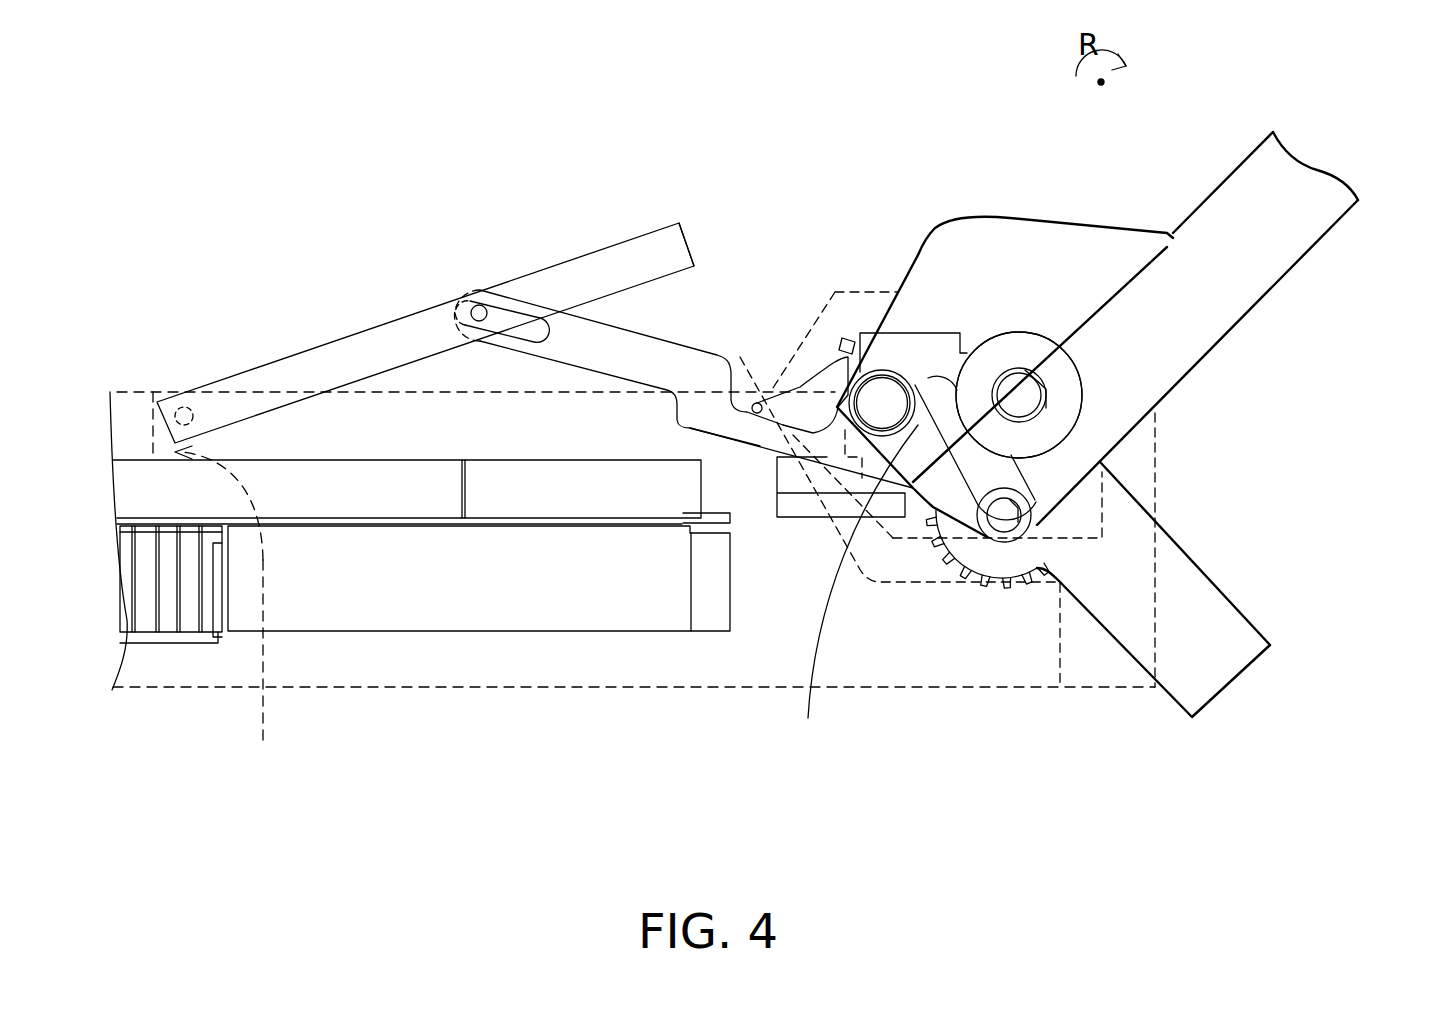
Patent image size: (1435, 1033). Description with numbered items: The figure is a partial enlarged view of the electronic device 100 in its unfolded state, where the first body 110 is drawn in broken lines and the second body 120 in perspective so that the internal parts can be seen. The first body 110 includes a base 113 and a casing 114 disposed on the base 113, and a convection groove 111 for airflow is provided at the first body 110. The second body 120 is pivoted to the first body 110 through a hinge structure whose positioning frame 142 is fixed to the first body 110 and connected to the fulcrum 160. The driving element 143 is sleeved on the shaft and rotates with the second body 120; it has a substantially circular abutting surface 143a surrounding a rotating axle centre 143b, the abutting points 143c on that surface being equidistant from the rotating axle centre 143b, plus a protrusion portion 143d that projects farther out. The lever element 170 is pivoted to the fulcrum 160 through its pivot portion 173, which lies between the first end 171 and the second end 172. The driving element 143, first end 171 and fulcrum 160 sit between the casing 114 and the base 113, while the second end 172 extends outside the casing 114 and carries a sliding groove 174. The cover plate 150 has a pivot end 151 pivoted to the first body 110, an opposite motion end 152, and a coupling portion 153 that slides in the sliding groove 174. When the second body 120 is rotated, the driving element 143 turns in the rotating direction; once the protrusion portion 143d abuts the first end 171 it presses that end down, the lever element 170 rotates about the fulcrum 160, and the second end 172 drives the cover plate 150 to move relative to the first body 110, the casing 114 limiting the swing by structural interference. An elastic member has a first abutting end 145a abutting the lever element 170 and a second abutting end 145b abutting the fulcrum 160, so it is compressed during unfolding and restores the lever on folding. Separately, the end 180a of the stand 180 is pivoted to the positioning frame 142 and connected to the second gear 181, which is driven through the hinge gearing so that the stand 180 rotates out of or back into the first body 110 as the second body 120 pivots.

The electronic device 100 is at (1355, 843).
The first body 110 is at (147, 672).
The convection groove 111 is at (230, 608).
The base 113 is at (1100, 668).
The casing 114 is at (840, 290).
The second body 120 is at (1323, 217).
The positioning frame 142 is at (1077, 433).
The driving element 143 is at (1065, 381).
The abutting surface 143a is at (1048, 338).
The rotating axle centre 143b is at (1050, 402).
The abutting points 143c is at (1015, 330).
The protrusion portion 143d is at (847, 588).
The first abutting end 145a is at (757, 402).
The second abutting end 145b is at (868, 345).
The cover plate 150 is at (375, 340).
The pivot end 151 is at (188, 400).
The motion end 152 is at (685, 237).
The coupling portion 153 is at (486, 312).
The fulcrum 160 is at (932, 350).
The lever element 170 is at (712, 388).
The first end 171 is at (917, 457).
The second end 172 is at (491, 300).
The pivot portion 173 is at (930, 347).
The sliding groove 174 is at (530, 330).
The stand 180 is at (1225, 624).
The end of the stand 180a is at (997, 562).
The second gear 181 is at (962, 582).